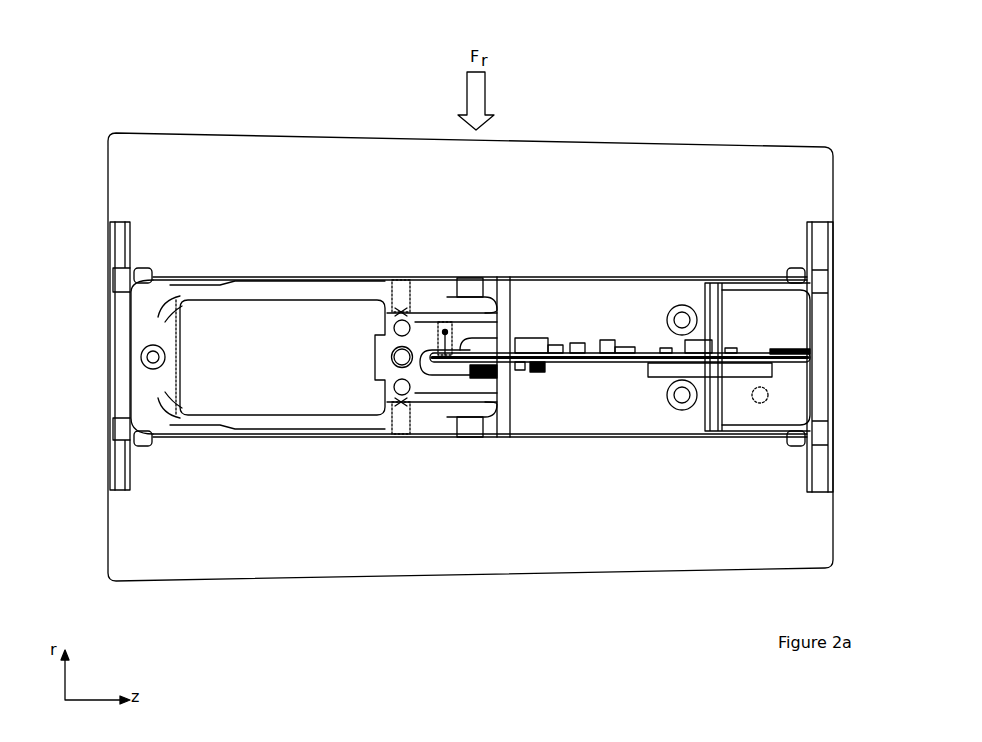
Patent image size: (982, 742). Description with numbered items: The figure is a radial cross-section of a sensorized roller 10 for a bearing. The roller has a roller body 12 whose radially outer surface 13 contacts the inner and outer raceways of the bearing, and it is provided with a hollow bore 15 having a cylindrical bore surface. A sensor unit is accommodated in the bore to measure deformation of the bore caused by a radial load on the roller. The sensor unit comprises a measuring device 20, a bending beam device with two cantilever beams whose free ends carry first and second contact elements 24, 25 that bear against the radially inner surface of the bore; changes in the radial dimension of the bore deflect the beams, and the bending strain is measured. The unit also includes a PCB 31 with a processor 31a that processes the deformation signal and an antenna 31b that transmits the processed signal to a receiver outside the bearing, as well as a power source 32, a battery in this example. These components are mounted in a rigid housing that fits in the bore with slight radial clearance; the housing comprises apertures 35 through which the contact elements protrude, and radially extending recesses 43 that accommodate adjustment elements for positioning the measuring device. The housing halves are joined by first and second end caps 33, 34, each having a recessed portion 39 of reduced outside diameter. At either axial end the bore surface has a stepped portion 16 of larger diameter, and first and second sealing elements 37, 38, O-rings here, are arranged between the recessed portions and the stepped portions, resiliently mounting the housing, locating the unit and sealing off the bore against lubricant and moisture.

The roller 10 is at (245, 110).
The roller body 12 is at (322, 527).
The radially outer surface 13 is at (275, 575).
The hollow bore 15 is at (370, 278).
The stepped portion 16 is at (146, 268).
The measuring device 20 is at (412, 322).
The first contact element 24 is at (467, 285).
The second contact element 25 is at (472, 440).
The PCB 31 is at (566, 362).
The processor 31a is at (532, 343).
The antenna 31b is at (785, 352).
The power source 32 is at (313, 368).
The first end cap 33 is at (120, 368).
The second end cap 34 is at (822, 258).
The aperture 35 is at (483, 436).
The first sealing element 37 is at (138, 438).
The second sealing element 38 is at (800, 443).
The recessed portion 39 is at (688, 278).
The recess 43 is at (401, 290).